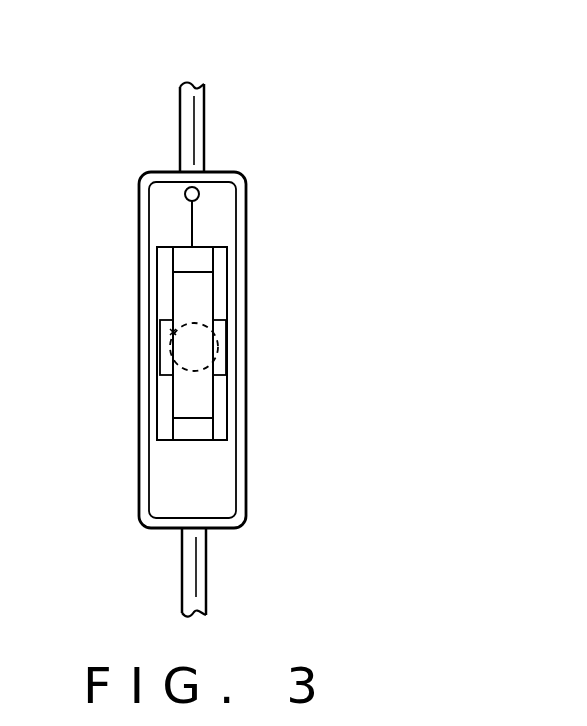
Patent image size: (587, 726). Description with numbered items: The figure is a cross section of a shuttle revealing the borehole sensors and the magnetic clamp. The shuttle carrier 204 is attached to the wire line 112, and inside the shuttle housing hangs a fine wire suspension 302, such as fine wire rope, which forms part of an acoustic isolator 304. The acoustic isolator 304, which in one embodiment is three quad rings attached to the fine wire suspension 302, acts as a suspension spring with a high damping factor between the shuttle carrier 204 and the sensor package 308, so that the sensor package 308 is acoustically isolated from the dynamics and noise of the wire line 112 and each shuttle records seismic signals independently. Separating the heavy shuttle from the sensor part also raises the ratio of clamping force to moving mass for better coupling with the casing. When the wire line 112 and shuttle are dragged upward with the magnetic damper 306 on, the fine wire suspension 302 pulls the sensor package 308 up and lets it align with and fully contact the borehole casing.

The wire line 112 is at (204, 107).
The shuttle carrier 204 is at (241, 172).
The fine wire suspension 302 is at (192, 215).
The acoustic isolator 304 is at (190, 261).
The magnetic damper 306 is at (157, 319).
The sensor package 308 is at (173, 391).